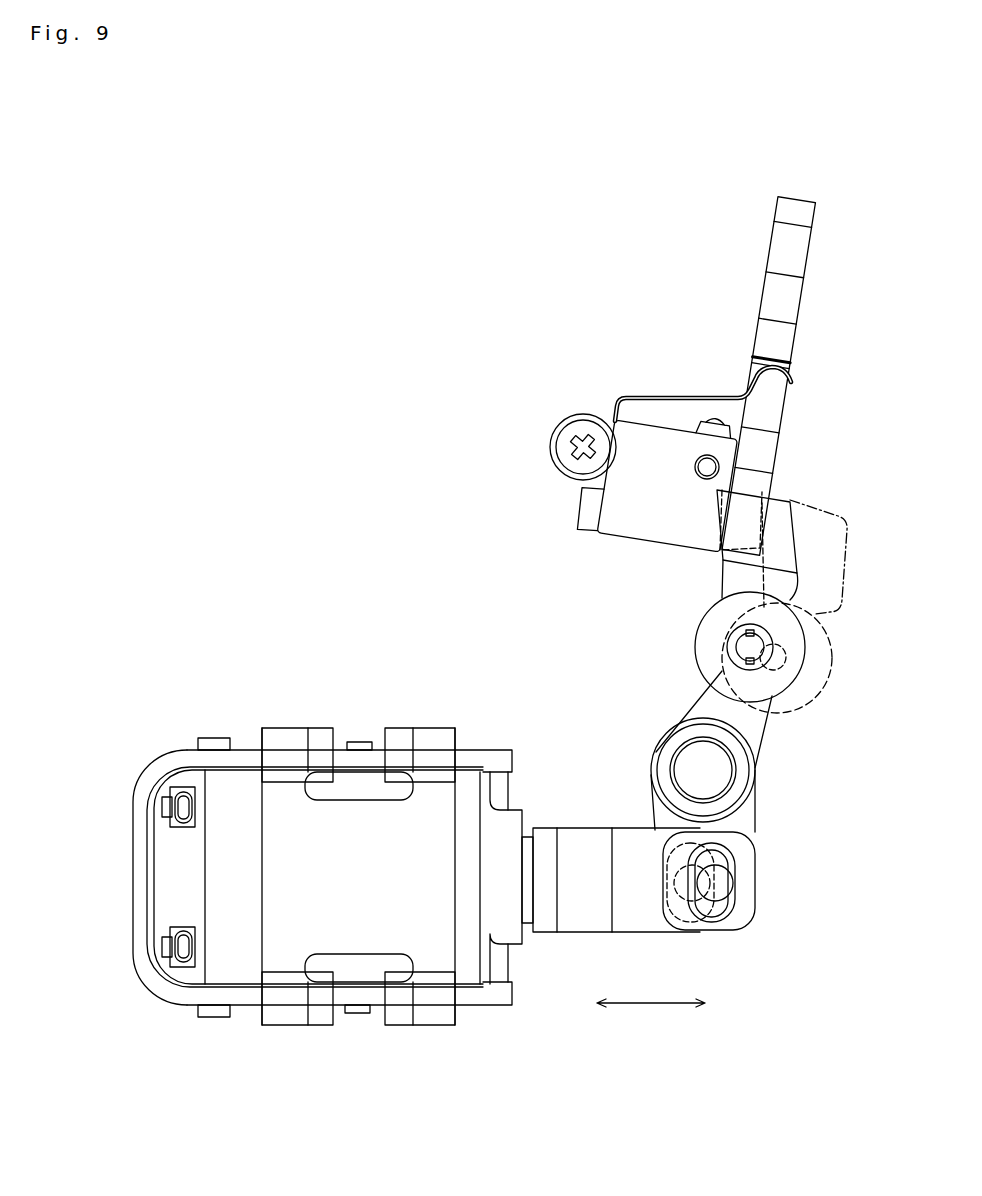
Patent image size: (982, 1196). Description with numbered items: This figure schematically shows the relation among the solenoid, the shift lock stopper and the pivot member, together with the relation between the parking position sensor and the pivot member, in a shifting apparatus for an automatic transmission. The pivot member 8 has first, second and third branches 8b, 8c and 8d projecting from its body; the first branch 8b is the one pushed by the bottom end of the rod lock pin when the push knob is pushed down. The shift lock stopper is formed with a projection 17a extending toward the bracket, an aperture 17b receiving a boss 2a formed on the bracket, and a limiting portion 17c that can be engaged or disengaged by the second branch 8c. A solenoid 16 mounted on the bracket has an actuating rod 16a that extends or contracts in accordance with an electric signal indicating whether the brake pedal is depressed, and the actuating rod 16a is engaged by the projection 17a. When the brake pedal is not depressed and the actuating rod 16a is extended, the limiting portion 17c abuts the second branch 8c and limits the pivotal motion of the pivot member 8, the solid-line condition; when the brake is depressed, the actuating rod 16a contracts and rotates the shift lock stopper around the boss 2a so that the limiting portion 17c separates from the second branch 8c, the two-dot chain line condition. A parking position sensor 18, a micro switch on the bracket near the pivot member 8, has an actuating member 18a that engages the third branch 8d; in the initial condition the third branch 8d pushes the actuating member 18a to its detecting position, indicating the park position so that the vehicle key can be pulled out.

The pivot member 8 is at (800, 195).
The first branch 8b is at (803, 237).
The second branch 8c is at (760, 483).
The third branch 8d is at (782, 343).
The parking position sensor 18 is at (526, 505).
The actuating member 18a is at (663, 400).
The limiting portion 17c is at (722, 556).
The aperture 17b is at (716, 771).
The projection 17a is at (720, 880).
The boss 2a is at (692, 772).
The solenoid 16 is at (337, 700).
The actuating rod 16a is at (630, 912).